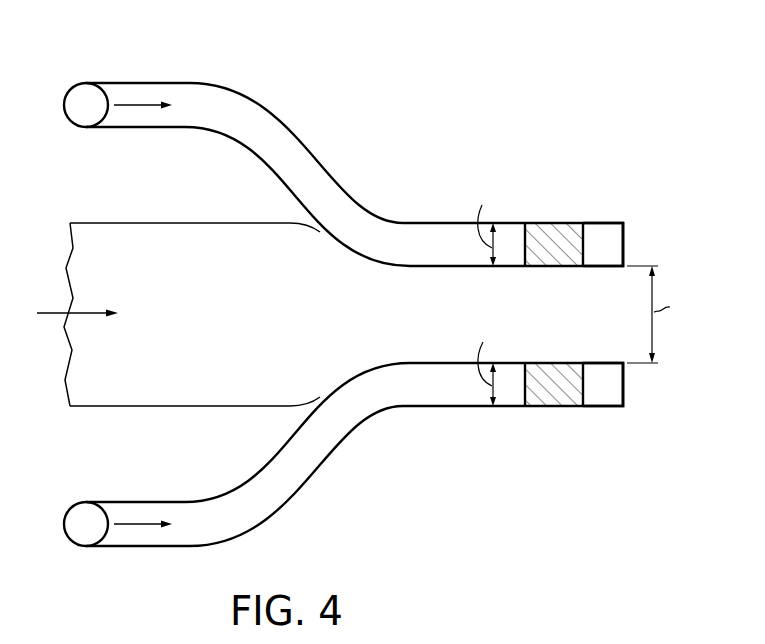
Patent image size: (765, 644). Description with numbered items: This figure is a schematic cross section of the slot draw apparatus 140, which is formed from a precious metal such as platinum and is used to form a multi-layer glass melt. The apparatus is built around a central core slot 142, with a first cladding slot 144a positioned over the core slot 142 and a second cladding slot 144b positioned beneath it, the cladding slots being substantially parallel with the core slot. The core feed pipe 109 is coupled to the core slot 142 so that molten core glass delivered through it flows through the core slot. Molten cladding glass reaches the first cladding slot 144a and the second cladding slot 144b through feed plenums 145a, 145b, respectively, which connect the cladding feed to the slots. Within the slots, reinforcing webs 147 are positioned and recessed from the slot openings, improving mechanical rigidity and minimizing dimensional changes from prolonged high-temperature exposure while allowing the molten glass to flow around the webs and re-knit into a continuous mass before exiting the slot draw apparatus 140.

The core feed pipe 109 is at (132, 222).
The slot draw apparatus 140 is at (524, 250).
The core slot 142 is at (567, 322).
The first cladding slot 144a is at (604, 231).
The second cladding slot 144b is at (603, 398).
The feed plenum 145a is at (132, 83).
The feed plenum 145b is at (130, 548).
The reinforcing webs 147 is at (552, 231).